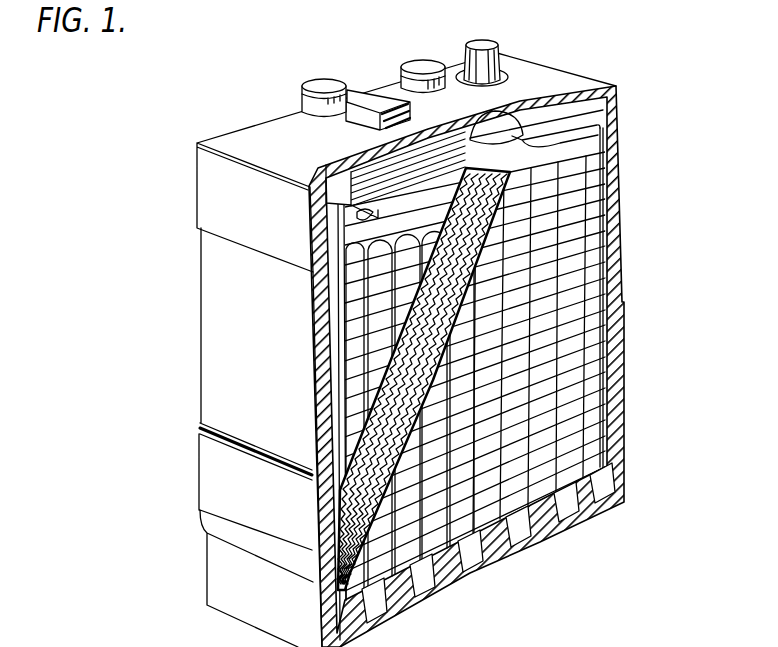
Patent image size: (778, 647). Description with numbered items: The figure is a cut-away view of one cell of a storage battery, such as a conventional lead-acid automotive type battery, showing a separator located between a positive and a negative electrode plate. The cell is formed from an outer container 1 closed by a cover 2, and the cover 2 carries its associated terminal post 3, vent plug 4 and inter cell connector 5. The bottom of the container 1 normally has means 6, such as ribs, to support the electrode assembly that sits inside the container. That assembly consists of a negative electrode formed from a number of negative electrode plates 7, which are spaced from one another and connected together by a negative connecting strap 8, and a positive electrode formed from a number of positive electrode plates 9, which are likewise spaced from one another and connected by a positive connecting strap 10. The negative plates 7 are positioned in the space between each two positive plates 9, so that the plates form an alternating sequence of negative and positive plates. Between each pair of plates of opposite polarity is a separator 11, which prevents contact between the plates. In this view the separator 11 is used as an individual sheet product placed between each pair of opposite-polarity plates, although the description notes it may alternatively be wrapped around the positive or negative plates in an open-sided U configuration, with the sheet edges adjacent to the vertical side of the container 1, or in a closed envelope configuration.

The outer container 1 is at (252, 540).
The cover 2 is at (256, 150).
The terminal post 3 is at (498, 52).
The vent plug 4 is at (420, 64).
The inter cell connector 5 is at (342, 108).
The means to support an electrode assembly 6 is at (386, 598).
The negative electrode plates 7 is at (573, 270).
The negative connecting strap 8 is at (549, 100).
The positive electrode plates 9 is at (353, 333).
The positive connecting strap 10 is at (340, 206).
The separator 11 is at (365, 399).